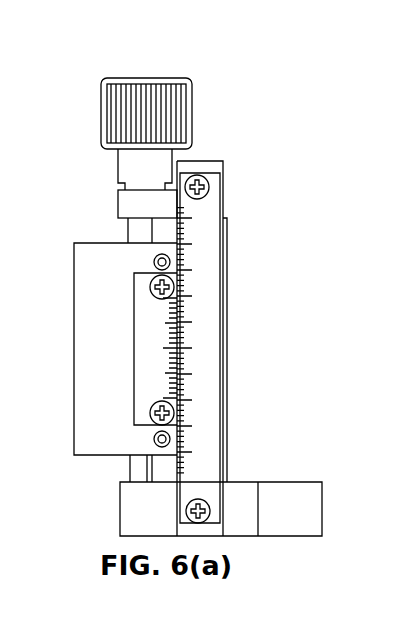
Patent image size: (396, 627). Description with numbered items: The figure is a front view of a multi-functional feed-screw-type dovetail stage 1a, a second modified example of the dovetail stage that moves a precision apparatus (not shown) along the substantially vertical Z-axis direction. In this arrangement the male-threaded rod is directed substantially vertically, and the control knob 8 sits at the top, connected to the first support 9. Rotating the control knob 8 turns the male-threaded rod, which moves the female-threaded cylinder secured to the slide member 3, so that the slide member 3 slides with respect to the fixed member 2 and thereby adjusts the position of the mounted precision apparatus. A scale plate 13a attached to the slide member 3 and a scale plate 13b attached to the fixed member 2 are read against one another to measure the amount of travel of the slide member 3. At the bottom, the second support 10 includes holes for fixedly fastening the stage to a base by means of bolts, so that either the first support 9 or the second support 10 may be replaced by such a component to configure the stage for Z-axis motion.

The multi-functional feed-screw-type dovetail stage 1a is at (220, 66).
The control knob 8 is at (108, 113).
The first support 9 is at (118, 200).
The slide member 3 is at (85, 418).
The scale plate 13a is at (137, 343).
The scale plate 13b is at (211, 308).
The fixed member 2 is at (225, 403).
The second support 10 is at (296, 523).